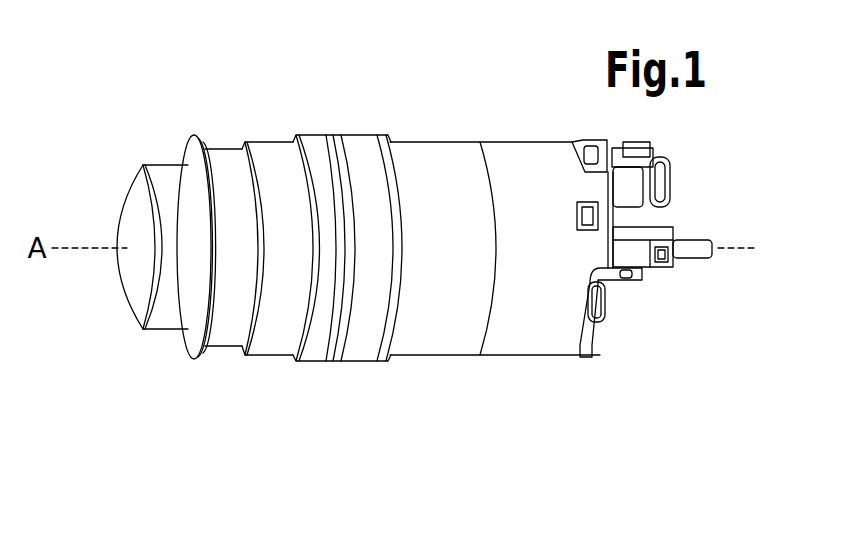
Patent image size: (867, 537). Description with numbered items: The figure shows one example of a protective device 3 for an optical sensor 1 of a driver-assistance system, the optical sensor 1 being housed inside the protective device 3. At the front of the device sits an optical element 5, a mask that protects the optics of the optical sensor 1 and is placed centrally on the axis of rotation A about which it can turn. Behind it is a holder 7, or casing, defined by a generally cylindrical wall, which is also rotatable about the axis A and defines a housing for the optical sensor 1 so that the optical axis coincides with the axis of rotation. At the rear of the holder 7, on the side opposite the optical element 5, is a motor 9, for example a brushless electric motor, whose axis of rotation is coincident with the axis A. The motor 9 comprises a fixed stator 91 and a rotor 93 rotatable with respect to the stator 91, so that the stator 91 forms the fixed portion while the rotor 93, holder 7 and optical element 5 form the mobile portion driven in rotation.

The optical sensor 1 is at (270, 118).
The protective device 3 is at (150, 127).
The optical element 5 is at (132, 220).
The holder 7 is at (228, 162).
The motor 9 is at (426, 100).
The stator 91 is at (428, 335).
The rotor 93 is at (365, 338).